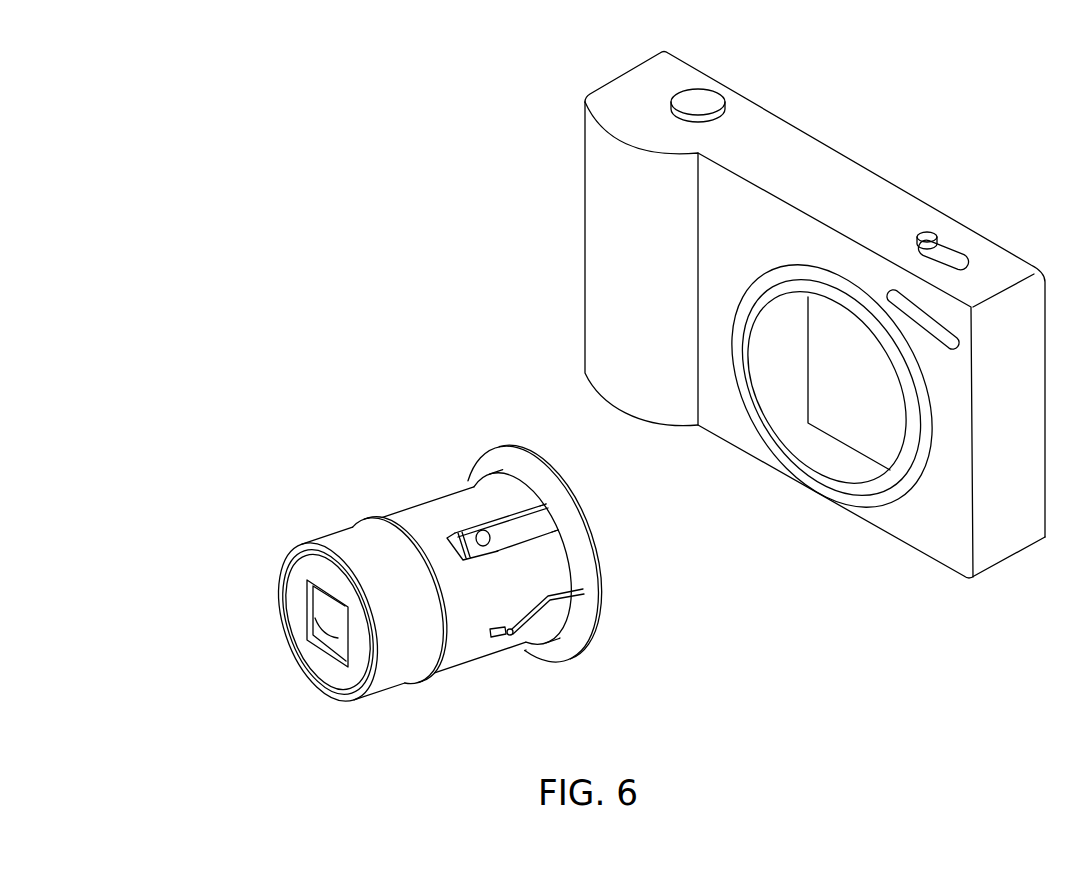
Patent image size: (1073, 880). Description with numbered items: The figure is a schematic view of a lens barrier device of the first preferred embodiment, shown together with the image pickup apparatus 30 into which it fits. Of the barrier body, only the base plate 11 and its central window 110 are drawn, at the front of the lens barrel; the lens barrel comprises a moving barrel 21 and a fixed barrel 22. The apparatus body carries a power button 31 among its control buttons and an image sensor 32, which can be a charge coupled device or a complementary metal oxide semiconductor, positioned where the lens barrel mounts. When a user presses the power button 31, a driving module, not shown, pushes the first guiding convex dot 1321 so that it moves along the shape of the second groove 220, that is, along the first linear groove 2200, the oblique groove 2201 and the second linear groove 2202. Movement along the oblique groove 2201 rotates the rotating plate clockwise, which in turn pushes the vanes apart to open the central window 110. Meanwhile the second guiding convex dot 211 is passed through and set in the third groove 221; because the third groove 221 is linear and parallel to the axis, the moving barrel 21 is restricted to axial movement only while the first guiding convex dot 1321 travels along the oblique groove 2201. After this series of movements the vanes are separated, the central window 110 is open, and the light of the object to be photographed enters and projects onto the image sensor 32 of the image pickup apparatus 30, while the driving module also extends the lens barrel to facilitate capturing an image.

The image pickup apparatus 30 is at (487, 229).
The power button 31 is at (700, 100).
The image sensor 32 is at (837, 422).
The base plate 11 is at (333, 678).
The central window 110 is at (312, 637).
The moving barrel 21 is at (345, 532).
The fixed barrel 22 is at (392, 512).
The second guiding convex dot 211 is at (476, 529).
The third groove 221 is at (557, 515).
The second groove 220 is at (598, 540).
The first linear groove 2200 is at (583, 593).
The oblique groove 2201 is at (563, 612).
The second linear groove 2202 is at (494, 636).
The first guiding convex dot 1321 is at (514, 638).